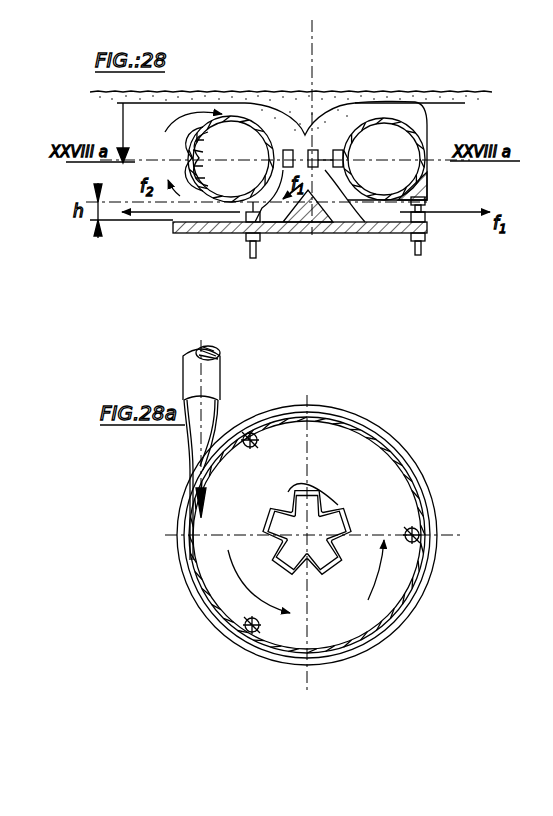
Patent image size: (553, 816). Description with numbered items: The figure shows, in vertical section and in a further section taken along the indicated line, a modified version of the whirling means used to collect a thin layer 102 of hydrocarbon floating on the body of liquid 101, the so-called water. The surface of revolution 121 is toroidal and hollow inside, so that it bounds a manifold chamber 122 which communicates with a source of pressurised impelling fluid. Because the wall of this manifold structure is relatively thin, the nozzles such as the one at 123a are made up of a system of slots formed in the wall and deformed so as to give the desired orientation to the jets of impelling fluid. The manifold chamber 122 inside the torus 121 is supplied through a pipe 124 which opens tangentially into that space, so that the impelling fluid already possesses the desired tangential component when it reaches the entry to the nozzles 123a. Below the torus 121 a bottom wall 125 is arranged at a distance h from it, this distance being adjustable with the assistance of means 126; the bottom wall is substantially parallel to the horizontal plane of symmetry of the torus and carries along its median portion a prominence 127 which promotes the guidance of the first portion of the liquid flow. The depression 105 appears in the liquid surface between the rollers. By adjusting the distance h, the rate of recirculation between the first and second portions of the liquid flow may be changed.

In FIG. 28, the body of liquid 101 is at (473, 118).
In FIG. 28, the thin layer of hydrocarbon 102 is at (432, 100).
In FIG. 28, the trough between rollers 105 is at (320, 130).
In FIG. 28, the toroidal surface of revolution 121 is at (428, 138).
In FIG. 28a, the toroidal surface of revolution 121 is at (422, 500).
In FIG. 28, the manifold chamber 122 is at (372, 135).
In FIG. 28a, the manifold chamber 122 is at (380, 468).
In FIG. 28, the nozzle 123a is at (288, 150).
In FIG. 28a, the nozzle 123a is at (300, 498).
In FIG. 28, the pipe 124 is at (205, 156).
In FIG. 28a, the pipe 124 is at (210, 382).
In FIG. 28, the bottom wall 125 is at (368, 233).
In FIG. 28, the adjusting means 126 is at (430, 210).
In FIG. 28, the prominence 127 is at (300, 222).